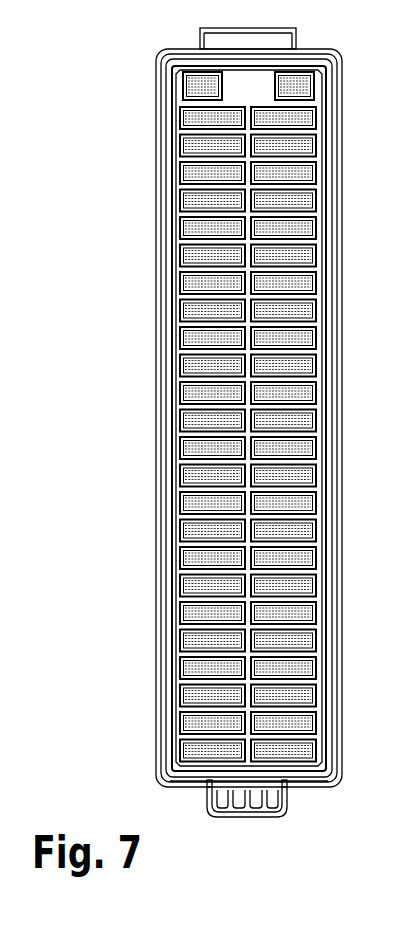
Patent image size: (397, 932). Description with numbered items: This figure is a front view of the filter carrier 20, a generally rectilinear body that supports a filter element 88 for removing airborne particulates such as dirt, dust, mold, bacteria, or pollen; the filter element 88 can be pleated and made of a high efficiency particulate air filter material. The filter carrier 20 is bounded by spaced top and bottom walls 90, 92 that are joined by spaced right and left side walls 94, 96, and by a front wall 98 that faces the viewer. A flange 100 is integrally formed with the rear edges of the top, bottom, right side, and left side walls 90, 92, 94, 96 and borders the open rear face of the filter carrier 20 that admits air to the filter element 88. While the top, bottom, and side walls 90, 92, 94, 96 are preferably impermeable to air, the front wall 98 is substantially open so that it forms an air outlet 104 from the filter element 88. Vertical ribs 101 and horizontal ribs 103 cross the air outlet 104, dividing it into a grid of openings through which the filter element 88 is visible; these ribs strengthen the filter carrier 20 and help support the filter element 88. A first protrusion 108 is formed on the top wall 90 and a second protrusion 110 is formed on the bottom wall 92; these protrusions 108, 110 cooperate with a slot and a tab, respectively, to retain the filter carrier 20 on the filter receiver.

The filter carrier 20 is at (80, 116).
The filter element 88 is at (305, 312).
The top wall 90 is at (312, 54).
The bottom wall 92 is at (302, 778).
The right side wall 94 is at (330, 360).
The left side wall 96 is at (170, 372).
The front wall 98 is at (318, 637).
The flange 100 is at (155, 615).
The vertical ribs 101 is at (240, 146).
The horizontal ribs 103 is at (215, 172).
The air outlet 104 is at (290, 200).
The first protrusion 108 is at (196, 34).
The second protrusion 110 is at (238, 819).